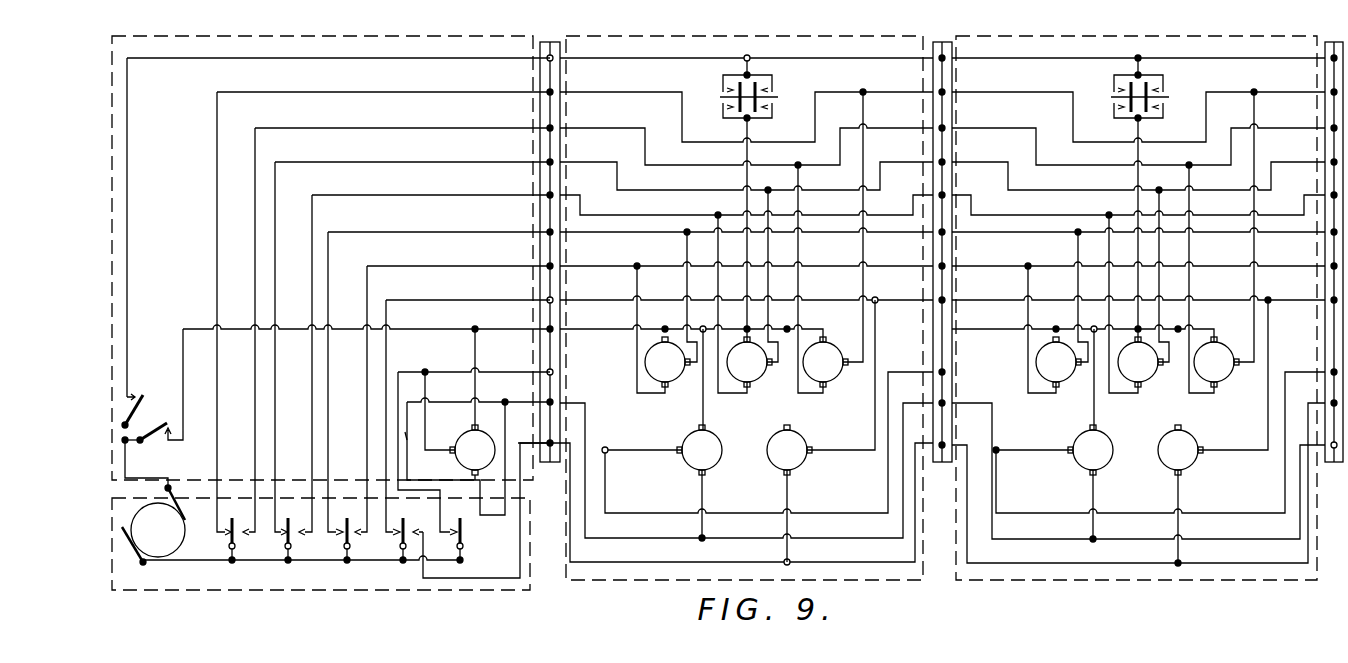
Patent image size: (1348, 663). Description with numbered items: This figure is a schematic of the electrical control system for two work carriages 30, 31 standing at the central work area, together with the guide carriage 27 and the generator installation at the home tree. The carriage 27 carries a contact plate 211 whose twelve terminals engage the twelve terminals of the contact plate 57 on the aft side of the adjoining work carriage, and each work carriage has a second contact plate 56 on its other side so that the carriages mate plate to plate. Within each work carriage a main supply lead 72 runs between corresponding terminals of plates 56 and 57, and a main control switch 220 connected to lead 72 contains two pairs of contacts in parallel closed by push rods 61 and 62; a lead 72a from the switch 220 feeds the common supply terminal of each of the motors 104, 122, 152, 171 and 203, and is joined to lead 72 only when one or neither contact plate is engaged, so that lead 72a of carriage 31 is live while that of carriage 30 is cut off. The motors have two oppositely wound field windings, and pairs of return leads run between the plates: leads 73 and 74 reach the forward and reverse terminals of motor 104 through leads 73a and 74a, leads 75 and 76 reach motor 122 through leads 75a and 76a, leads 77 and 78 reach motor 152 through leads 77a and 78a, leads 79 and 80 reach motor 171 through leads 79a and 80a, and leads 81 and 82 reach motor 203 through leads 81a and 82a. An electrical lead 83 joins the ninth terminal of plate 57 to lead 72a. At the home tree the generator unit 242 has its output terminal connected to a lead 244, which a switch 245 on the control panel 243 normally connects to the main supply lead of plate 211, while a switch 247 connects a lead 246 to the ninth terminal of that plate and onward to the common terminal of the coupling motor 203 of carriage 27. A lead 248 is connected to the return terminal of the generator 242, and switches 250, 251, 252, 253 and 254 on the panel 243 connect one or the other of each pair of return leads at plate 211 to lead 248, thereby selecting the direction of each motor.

The carriage 27 is at (280, 40).
The carriage 30 is at (672, 40).
The carriage 31 is at (1062, 40).
The contact plate 56 is at (932, 48).
The contact plate 57 is at (562, 48).
The push rod 61 is at (778, 97).
The push rod 62 is at (728, 92).
The main supply lead 72 is at (726, 58).
The lead 73 is at (771, 103).
The lead 74 is at (790, 135).
The lead 75 is at (800, 164).
The lead 76 is at (818, 193).
The lead 77 is at (826, 228).
The lead 78 is at (846, 261).
The lead 79 is at (855, 300).
The lead 80 is at (921, 484).
The lead 81 is at (861, 426).
The lead 82 is at (866, 457).
The electrical lead 83 is at (526, 330).
The lead 72a is at (744, 150).
The lead 73a is at (860, 278).
The lead 74a is at (800, 250).
The lead 75a is at (775, 215).
The lead 76a is at (715, 235).
The lead 77a is at (684, 246).
The lead 78a is at (634, 278).
The lead 79a is at (878, 372).
The lead 80a is at (800, 495).
The lead 81a is at (848, 391).
The lead 82a is at (897, 504).
The motor 104 is at (838, 372).
The motor 122 is at (757, 375).
The motor 152 is at (676, 375).
The motor 171 is at (805, 442).
The motor 203 is at (465, 437).
The contact plate 211 is at (540, 42).
The main control switch 220 is at (775, 90).
The generator unit 242 is at (160, 560).
The control panel 243 is at (515, 590).
The lead 244 is at (143, 480).
The switch 245 is at (145, 392).
The lead 246 is at (357, 371).
The switch 247 is at (152, 428).
The lead 248 is at (245, 562).
The switch 250 is at (214, 540).
The switch 251 is at (281, 540).
The switch 252 is at (340, 540).
The switch 253 is at (384, 540).
The switch 254 is at (466, 535).